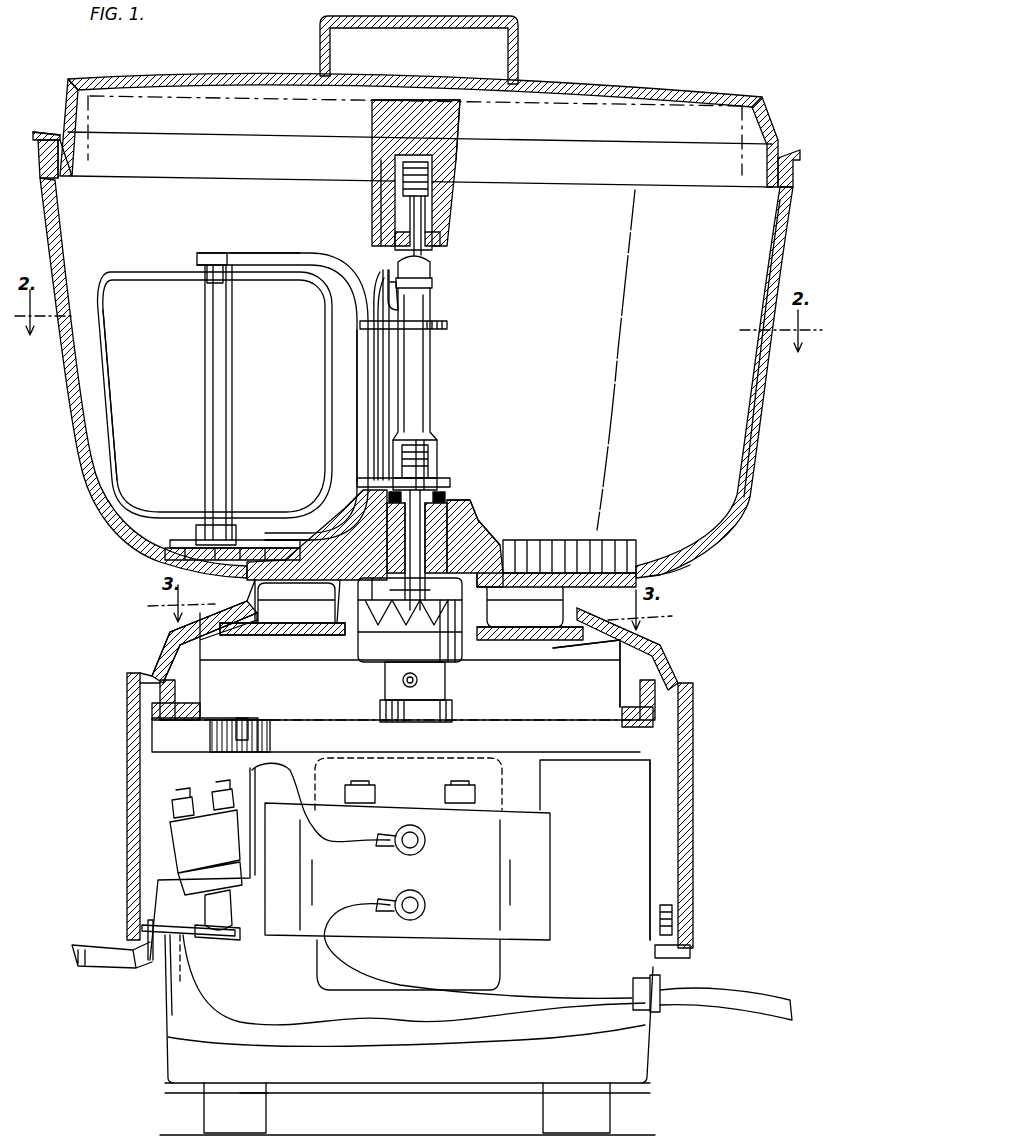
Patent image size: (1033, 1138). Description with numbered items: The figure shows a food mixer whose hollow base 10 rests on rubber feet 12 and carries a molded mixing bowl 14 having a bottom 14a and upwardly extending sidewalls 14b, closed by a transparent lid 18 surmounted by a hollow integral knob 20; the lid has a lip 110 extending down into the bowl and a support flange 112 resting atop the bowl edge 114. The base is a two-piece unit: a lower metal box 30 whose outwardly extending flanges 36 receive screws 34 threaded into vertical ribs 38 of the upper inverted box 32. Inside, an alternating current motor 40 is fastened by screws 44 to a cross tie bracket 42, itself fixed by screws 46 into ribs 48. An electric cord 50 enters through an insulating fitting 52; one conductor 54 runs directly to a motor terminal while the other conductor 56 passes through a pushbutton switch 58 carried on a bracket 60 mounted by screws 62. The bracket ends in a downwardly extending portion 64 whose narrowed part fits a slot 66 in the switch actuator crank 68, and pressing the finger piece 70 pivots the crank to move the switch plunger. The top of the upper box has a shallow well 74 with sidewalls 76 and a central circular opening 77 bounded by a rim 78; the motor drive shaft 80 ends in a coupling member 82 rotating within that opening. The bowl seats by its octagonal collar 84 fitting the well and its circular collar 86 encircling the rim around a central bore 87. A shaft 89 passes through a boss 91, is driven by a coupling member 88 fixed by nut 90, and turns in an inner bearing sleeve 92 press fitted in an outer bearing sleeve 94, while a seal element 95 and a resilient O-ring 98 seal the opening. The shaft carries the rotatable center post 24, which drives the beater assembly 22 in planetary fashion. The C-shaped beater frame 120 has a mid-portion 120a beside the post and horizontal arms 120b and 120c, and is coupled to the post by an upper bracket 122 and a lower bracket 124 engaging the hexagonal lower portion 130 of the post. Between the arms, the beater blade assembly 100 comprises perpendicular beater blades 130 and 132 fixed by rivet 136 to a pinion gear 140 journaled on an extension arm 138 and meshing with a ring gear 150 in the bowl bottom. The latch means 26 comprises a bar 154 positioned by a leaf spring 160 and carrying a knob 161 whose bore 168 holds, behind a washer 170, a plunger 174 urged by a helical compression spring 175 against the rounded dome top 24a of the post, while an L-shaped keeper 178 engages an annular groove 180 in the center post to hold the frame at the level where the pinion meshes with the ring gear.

The base 10 is at (142, 651).
The feet 12 is at (206, 1106).
The mixing bowl 14 is at (65, 408).
The bottom 14a is at (670, 578).
The sidewalls 14b is at (756, 370).
The lid 18 is at (592, 70).
The knob 20 is at (322, 36).
The beater assembly 22 is at (202, 242).
The center post 24 is at (432, 383).
The rounded dome top 24a is at (432, 265).
The latch means 26 is at (360, 110).
The lower box 30 is at (420, 1072).
The upper inverted box 32 is at (694, 778).
The screws 34 is at (180, 970).
The flanges 36 is at (660, 926).
The ribs 38 is at (650, 862).
The motor 40 is at (422, 884).
The cross tie bracket 42 is at (506, 722).
The screws 44 is at (442, 790).
The screws 46 is at (177, 692).
The ribs 48 is at (232, 648).
The electric cord 50 is at (770, 1016).
The insulating fitting 52 is at (656, 1012).
The conductor 54 is at (410, 982).
The conductor 56 is at (305, 1025).
The switch 58 is at (212, 848).
The bracket 60 is at (258, 868).
The screws 62 is at (248, 718).
The portion 64 is at (150, 962).
The slot 66 is at (165, 925).
The switch actuator crank 68 is at (225, 940).
The finger piece 70 is at (72, 947).
The well 74 is at (240, 597).
The sidewalls 76 is at (235, 620).
The circular opening 77 is at (356, 650).
The rim 78 is at (490, 615).
The drive shaft 80 is at (380, 700).
The coupling member 82 is at (383, 665).
The collar 84 is at (570, 602).
The collar 86 is at (340, 613).
The bore 87 is at (498, 598).
The coupling member 88 is at (528, 546).
The shaft 89 is at (448, 538).
The nut 90 is at (394, 586).
The boss 91 is at (485, 540).
The inner bearing sleeve 92 is at (449, 520).
The outer bearing sleeve 94 is at (447, 508).
The seal element 95 is at (452, 478).
The O-ring 98 is at (446, 496).
The beater blade assembly 100 is at (124, 262).
The lip 110 is at (66, 160).
The support flange 112 is at (38, 130).
The edge 114 is at (40, 142).
The beater frame 120 is at (316, 248).
The mid-portion 120a is at (356, 395).
The arm 120b is at (258, 252).
The arm 120c is at (302, 538).
The upper bracket 122 is at (449, 325).
The lower bracket 124 is at (440, 460).
The beater blade 130 is at (205, 328).
The beater blade 132 is at (113, 405).
The rivet 136 is at (200, 524).
The extension arm 138 is at (270, 586).
The pinion gear 140 is at (165, 554).
The ring gear 150 is at (150, 540).
The bar 154 is at (382, 348).
The leaf spring 160 is at (370, 296).
The knob 161 is at (456, 118).
The bore 168 is at (428, 215).
The washer 170 is at (438, 244).
The plunger 174 is at (418, 222).
The helical compression spring 175 is at (430, 173).
The L-shaped keeper 178 is at (400, 300).
The annular groove 180 is at (434, 283).